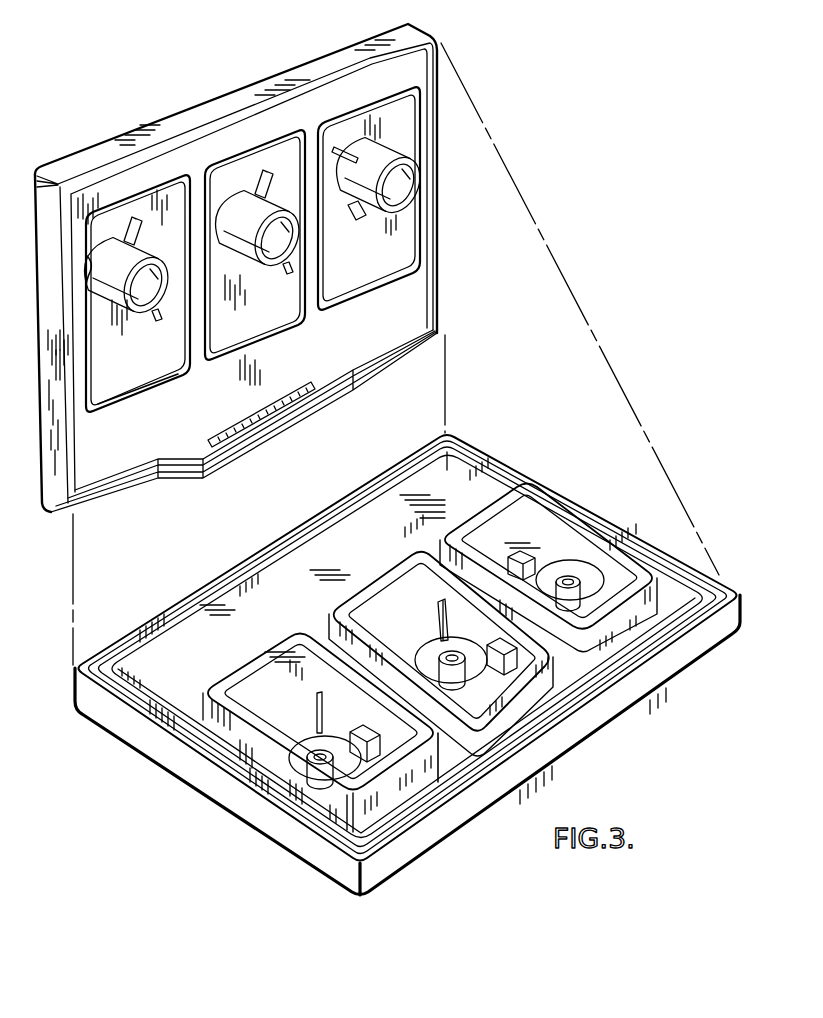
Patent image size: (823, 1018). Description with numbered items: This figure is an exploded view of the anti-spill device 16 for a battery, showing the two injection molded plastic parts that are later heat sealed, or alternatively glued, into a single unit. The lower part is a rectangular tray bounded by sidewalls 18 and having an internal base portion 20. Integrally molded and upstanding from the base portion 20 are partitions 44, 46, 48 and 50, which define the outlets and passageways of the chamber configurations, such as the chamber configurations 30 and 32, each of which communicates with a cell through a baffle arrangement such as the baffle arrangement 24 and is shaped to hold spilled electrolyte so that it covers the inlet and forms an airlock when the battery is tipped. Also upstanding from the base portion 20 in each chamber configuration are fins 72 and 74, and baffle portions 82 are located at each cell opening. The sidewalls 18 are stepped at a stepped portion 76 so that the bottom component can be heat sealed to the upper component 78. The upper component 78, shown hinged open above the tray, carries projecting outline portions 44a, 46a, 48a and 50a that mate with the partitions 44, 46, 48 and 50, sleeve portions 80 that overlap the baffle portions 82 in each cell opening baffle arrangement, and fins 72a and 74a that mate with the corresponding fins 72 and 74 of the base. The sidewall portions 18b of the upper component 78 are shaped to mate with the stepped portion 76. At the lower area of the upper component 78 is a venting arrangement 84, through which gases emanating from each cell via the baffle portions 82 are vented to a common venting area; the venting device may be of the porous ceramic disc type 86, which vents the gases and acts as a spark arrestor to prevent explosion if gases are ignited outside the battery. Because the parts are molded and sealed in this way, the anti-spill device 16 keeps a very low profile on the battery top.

The anti-spill device 16 is at (213, 818).
The sidewalls 18 is at (152, 747).
The sidewall portions 18b is at (77, 478).
The base portion 20 is at (187, 653).
The baffle arrangement 24 is at (217, 670).
The chamber configuration 30 is at (383, 537).
The chamber configuration 32 is at (487, 490).
The partition 44 is at (320, 627).
The partition 46 is at (243, 667).
The partition 48 is at (242, 760).
The partition 50 is at (392, 773).
The fin 72 is at (313, 707).
The fin 74 is at (353, 727).
The stepped portion 76 is at (115, 685).
The upper component 78 is at (232, 106).
The sleeve portions 80 is at (392, 150).
The baffle portions 82 is at (572, 572).
The venting arrangement 84 is at (255, 428).
The porous ceramic disc 86 is at (283, 393).
The outline portion 44a is at (193, 333).
The outline portion 46a is at (150, 387).
The outline portion 48a is at (100, 373).
The outline portion 50a is at (118, 200).
The fin 72a is at (350, 147).
The fin 74a is at (367, 217).